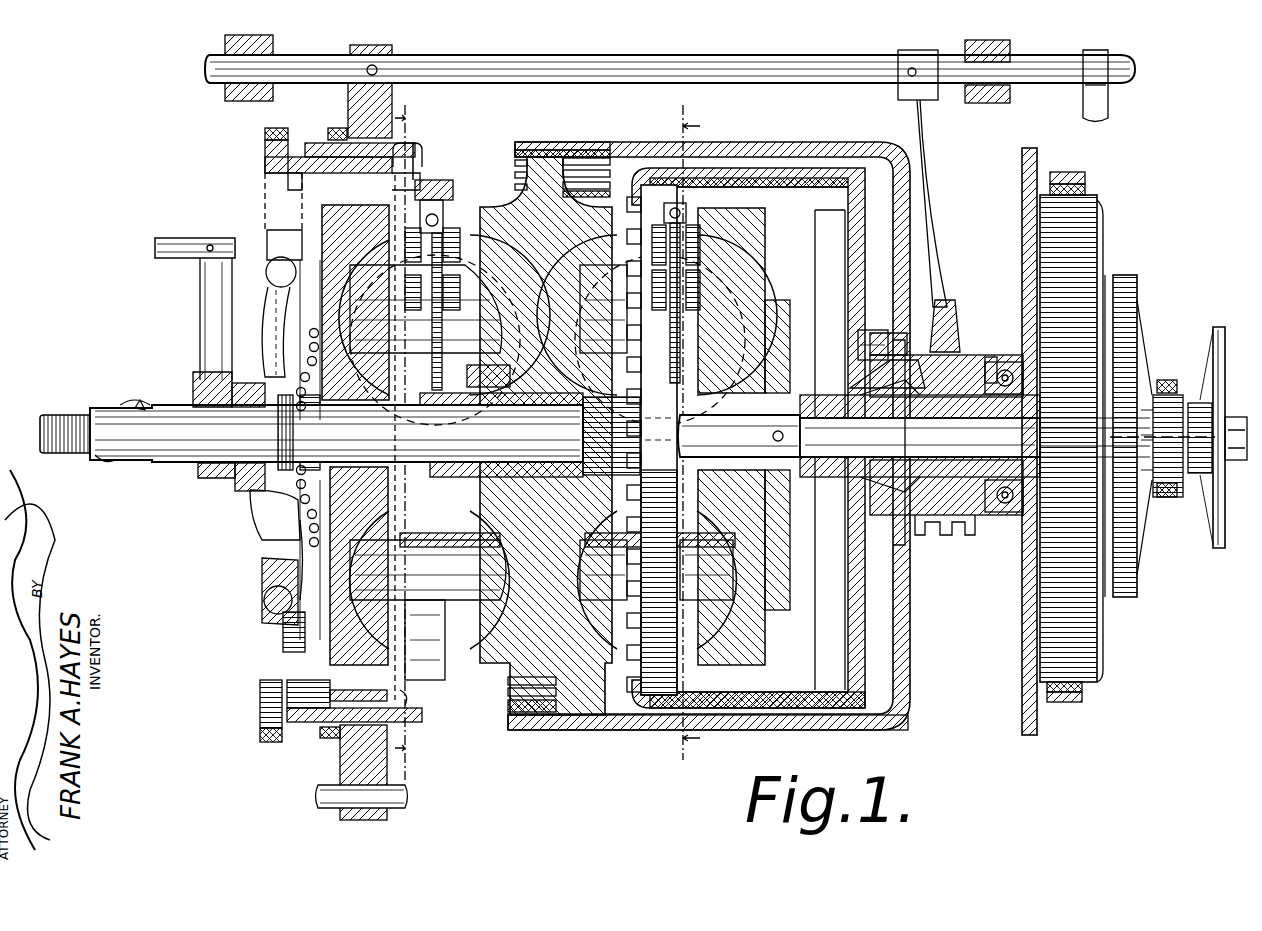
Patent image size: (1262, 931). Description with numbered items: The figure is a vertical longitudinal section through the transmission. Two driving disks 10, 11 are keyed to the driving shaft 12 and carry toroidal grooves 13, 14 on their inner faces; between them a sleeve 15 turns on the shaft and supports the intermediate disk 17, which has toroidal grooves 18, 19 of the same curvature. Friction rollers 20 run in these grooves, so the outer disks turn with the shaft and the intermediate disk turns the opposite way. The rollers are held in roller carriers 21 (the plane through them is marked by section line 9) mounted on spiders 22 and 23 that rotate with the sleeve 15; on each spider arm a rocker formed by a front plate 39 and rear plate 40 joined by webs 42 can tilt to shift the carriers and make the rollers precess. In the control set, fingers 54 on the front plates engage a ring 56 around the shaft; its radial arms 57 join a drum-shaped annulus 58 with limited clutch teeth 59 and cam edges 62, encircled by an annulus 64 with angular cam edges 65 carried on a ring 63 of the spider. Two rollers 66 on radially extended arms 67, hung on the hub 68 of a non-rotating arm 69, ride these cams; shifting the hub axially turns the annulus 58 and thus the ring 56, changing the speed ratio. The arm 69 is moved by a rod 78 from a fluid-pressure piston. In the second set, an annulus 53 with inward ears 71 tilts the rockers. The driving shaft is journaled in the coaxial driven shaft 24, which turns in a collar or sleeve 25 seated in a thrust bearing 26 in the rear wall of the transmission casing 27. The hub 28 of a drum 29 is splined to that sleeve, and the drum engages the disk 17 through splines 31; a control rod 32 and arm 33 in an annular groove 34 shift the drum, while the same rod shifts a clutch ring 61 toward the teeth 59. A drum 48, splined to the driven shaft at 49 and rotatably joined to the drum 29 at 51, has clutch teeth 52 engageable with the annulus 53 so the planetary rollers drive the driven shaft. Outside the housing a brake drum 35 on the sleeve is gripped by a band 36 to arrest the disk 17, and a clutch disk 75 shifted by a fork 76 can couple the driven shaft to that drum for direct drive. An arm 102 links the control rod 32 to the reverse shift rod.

The section line 9- 9 is at (405, 435).
The driving disk 10 is at (370, 212).
The driving disk 11 is at (745, 212).
The driving shaft 12 is at (420, 435).
The toroidal groove 13 is at (345, 290).
The toroidal groove 14 is at (745, 300).
The sleeve 15 is at (625, 420).
The intermediate disk 17 is at (510, 210).
The toroidal groove 18 is at (510, 442).
The toroidal groove 19 is at (577, 442).
The friction rollers 20 is at (542, 432).
The roller carriers 21 is at (442, 640).
The spider 22 is at (547, 348).
The spider 23 is at (658, 312).
The driven shaft 24 is at (1032, 441).
The collar or sleeve 25 is at (1036, 405).
The thrust bearing 26 is at (1000, 368).
The transmission casing 27 is at (1022, 192).
The hub 28 is at (965, 345).
The drum 29 is at (880, 148).
The splines 31 is at (560, 147).
The control rod 32 is at (748, 70).
The arm 33 is at (938, 150).
The annular groove 34 is at (940, 530).
The brake drum 35 is at (1095, 225).
The band 36 is at (1070, 175).
The front rocker plate 39 is at (420, 230).
The rear rocker plate 40 is at (452, 240).
The webs 42 is at (436, 200).
The drum 48 is at (770, 180).
The spline connection 49 is at (840, 395).
The rotatable connection 51 is at (850, 345).
The clutch teeth 52 is at (640, 185).
The annulus 53 is at (680, 185).
The fingers 54 is at (412, 408).
The ring 56 is at (380, 415).
The radial arms 57 is at (410, 150).
The drum-shaped annulus 58 is at (268, 165).
The clutch teeth 59 is at (265, 133).
The clutch ring 61 is at (390, 50).
The cam edges 62 is at (267, 442).
The ring 63 is at (380, 186).
The annulus 64 is at (322, 143).
The cam edges 65 is at (268, 235).
The rollers 66 is at (265, 272).
The radially extended arms 67 is at (236, 526).
The hub 68 is at (205, 478).
The arm 69 is at (200, 312).
The ears 71 is at (682, 208).
The clutch member disk 75 is at (1135, 285).
The fork 76 is at (1165, 385).
The rod 78 is at (168, 240).
The arm 102 is at (1098, 118).